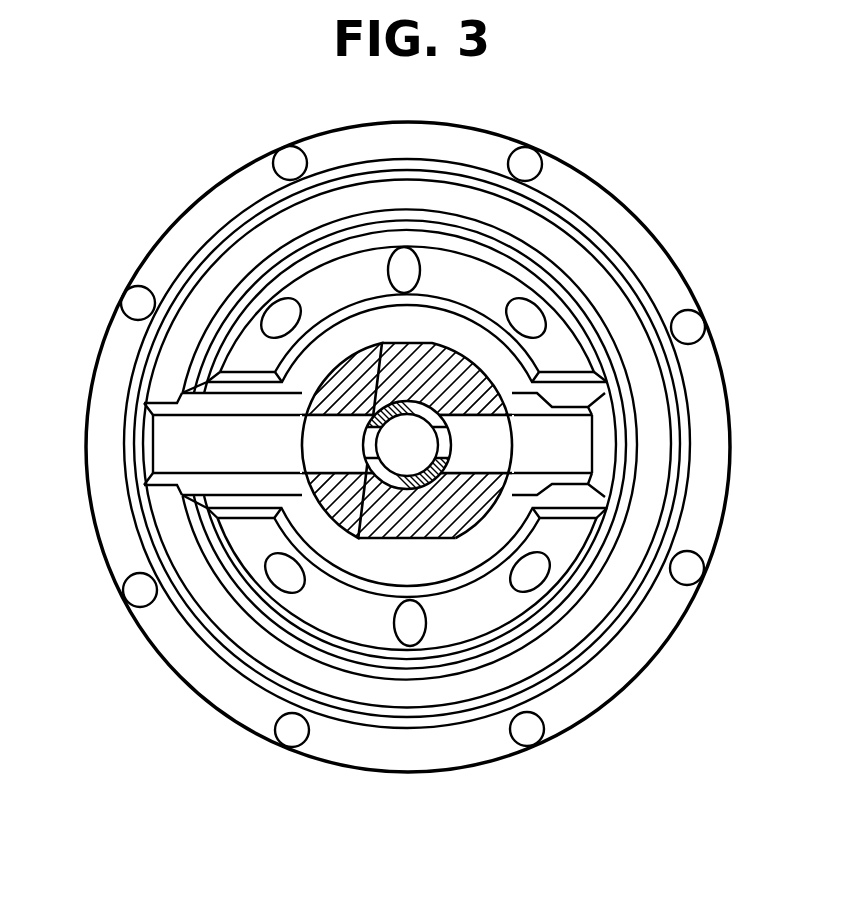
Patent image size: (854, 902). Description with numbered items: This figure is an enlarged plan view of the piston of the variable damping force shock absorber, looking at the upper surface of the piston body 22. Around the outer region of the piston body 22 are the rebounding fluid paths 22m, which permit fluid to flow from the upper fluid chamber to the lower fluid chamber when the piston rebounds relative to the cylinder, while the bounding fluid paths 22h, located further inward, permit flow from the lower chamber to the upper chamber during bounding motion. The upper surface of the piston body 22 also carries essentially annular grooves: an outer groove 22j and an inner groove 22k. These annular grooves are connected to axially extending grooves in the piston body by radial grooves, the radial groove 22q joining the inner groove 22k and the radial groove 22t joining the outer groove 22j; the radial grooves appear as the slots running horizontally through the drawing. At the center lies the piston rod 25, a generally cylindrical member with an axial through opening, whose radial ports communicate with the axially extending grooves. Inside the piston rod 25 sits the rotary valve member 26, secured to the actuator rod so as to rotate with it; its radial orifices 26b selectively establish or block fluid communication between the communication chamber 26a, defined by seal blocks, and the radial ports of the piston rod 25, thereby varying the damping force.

The piston body 22 is at (672, 196).
The rebounding fluid path 22m is at (293, 165).
The bounding fluid path 22h is at (402, 262).
The upper outer groove 22j is at (447, 192).
The upper inner groove 22k is at (500, 287).
The radial groove 22t is at (168, 433).
The radial groove 22q is at (575, 444).
The rotary valve member 26 is at (472, 432).
The communication chamber 26a is at (400, 433).
The radial orifices 26b is at (310, 436).
The piston rod 25 is at (470, 541).